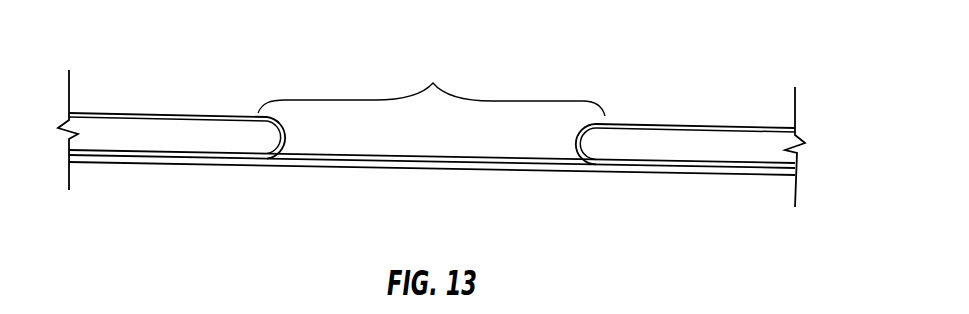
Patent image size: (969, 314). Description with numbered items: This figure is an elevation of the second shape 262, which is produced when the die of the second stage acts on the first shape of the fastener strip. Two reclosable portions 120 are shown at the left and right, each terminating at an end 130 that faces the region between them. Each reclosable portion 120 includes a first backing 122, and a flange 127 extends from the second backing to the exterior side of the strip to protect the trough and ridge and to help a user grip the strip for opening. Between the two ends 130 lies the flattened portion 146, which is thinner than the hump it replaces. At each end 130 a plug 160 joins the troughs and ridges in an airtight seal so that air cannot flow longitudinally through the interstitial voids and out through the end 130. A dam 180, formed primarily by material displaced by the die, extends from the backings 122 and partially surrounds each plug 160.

The reclosable portion 120 is at (150, 132).
The end 130 is at (263, 138).
The first backing 122 is at (172, 163).
The flange 127 is at (250, 158).
The flattened portion 146 is at (420, 167).
The plug 160 is at (286, 132).
The dam 180 is at (291, 151).
The second shape 262 is at (431, 84).